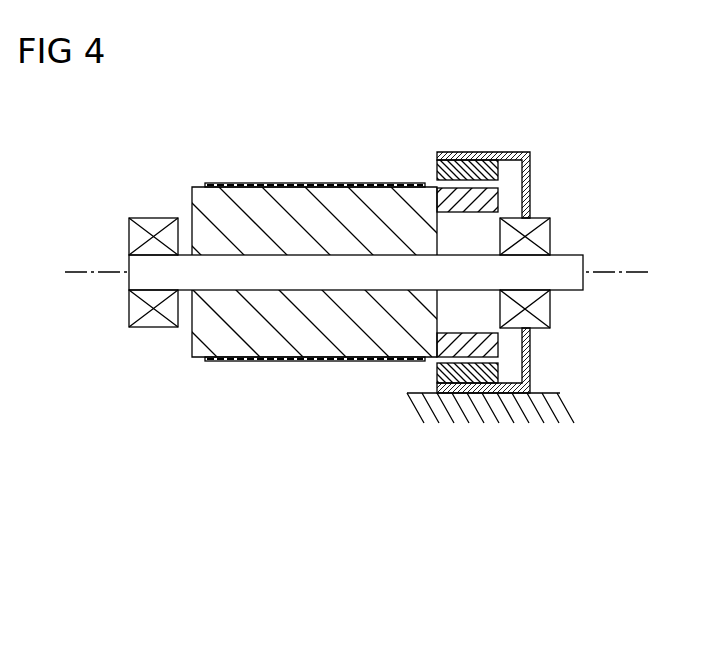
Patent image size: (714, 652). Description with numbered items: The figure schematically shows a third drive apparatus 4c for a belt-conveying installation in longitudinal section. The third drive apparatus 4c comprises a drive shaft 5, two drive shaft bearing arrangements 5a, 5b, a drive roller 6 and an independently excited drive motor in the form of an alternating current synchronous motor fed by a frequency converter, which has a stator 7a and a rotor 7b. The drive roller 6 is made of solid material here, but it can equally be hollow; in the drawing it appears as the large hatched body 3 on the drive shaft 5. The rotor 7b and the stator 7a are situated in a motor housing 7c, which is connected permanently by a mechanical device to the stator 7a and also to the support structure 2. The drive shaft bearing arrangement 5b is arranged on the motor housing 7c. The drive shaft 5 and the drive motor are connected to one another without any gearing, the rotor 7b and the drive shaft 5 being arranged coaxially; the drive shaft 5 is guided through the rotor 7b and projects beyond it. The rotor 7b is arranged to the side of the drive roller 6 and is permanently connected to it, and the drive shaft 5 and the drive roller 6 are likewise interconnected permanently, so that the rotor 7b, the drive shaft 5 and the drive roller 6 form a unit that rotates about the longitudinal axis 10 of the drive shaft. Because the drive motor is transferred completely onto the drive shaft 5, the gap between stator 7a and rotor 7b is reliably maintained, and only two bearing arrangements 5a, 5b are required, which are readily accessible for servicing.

The support structure 2 is at (494, 405).
The rotor 3 is at (312, 187).
The third drive apparatus 4c is at (214, 133).
The drive shaft 5 is at (129, 262).
The drive shaft bearing arrangement 5a is at (152, 328).
The drive shaft bearing arrangement 5b is at (552, 308).
The drive roller 6 is at (375, 198).
The stator 7a is at (494, 169).
The rotor 7b is at (492, 197).
The motor housing 7c is at (495, 152).
The longitudinal axis 10 is at (637, 272).